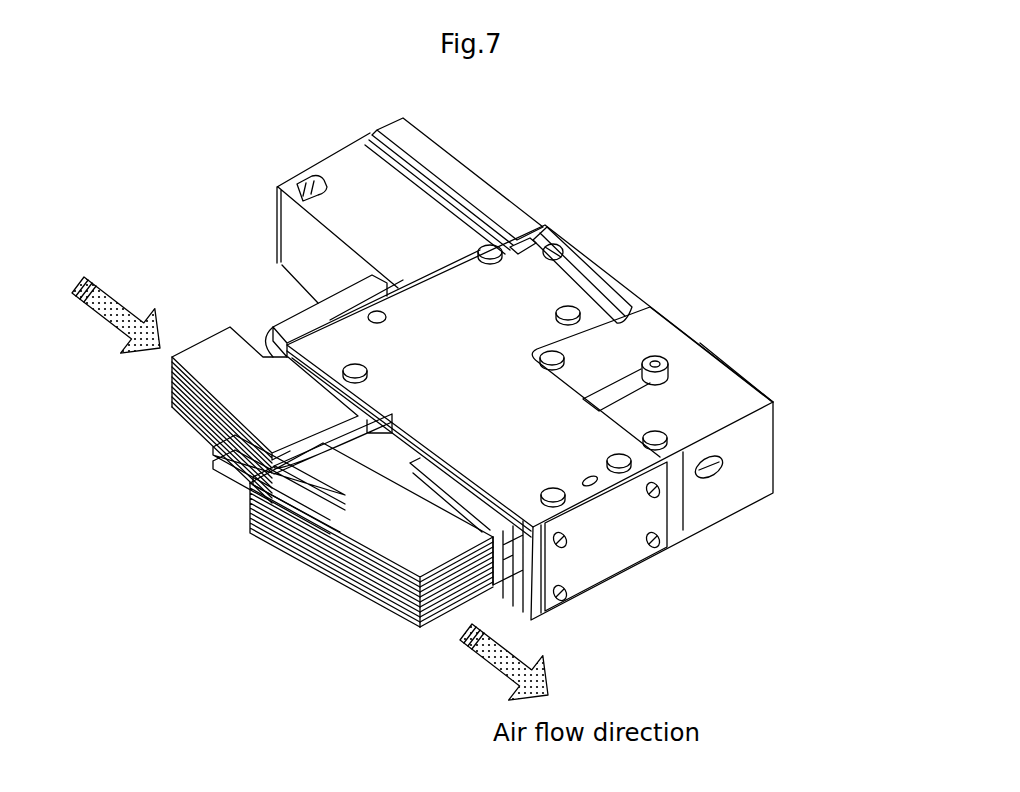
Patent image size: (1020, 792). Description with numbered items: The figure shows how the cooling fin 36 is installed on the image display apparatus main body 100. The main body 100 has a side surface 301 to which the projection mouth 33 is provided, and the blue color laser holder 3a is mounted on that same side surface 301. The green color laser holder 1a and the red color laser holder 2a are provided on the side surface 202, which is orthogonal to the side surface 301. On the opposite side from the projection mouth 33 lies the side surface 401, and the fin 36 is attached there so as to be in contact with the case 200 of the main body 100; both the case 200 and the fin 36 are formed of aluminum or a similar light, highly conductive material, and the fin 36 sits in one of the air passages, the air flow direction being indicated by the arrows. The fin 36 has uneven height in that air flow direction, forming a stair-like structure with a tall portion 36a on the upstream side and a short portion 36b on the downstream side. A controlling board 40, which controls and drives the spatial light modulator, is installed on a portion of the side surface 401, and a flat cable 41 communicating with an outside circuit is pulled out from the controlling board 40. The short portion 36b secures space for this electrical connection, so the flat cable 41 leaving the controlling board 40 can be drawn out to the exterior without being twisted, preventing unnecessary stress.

The green color laser holder 1a is at (363, 177).
The side surface 202 is at (428, 268).
The side surface 301 is at (560, 255).
The blue color laser holder 3a is at (568, 276).
The red color laser holder 2a is at (320, 310).
The projection mouth 33 is at (757, 371).
The side surface 401 is at (295, 368).
The tall portion 36a is at (282, 403).
The fin 36 is at (186, 590).
The short portion 36b is at (333, 490).
The flat cable 41 is at (405, 537).
The case 200 is at (700, 413).
The controlling board 40 is at (548, 588).
The image display apparatus main body 100 is at (702, 580).